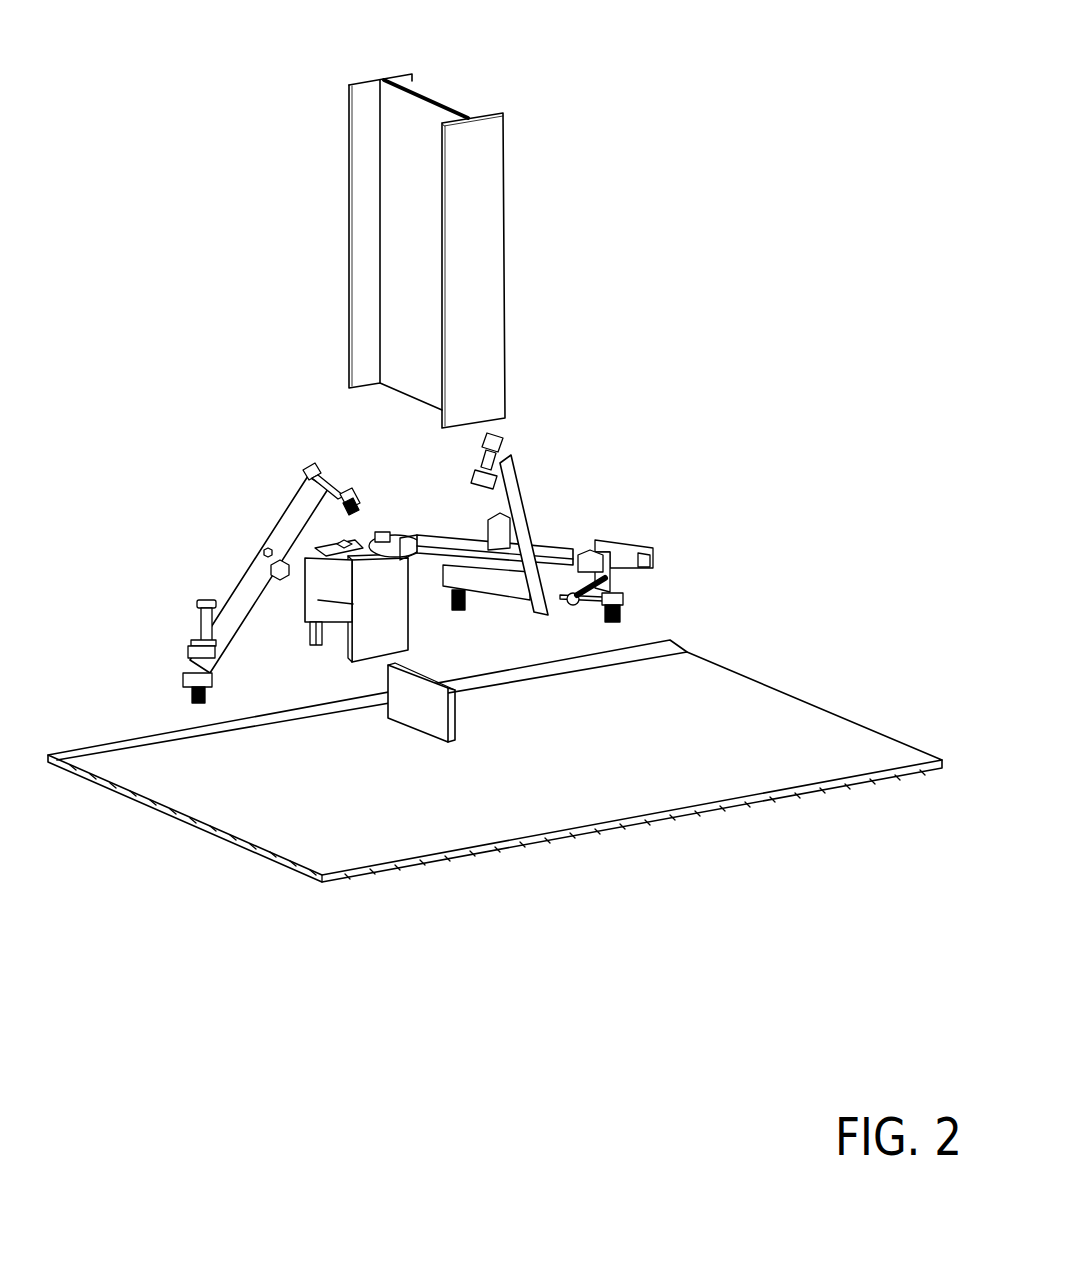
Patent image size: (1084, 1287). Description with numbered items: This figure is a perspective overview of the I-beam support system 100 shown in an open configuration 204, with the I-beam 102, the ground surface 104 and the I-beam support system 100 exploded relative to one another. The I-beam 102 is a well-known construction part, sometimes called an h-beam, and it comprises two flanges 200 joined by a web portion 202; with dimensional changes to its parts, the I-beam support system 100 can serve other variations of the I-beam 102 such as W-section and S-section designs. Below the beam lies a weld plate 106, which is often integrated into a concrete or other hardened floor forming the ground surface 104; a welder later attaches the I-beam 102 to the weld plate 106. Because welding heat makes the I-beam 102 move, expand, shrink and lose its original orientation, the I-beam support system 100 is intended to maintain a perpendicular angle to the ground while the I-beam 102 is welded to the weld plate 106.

The I-beam support system 100 is at (348, 555).
The I-beam 102 is at (431, 218).
The ground surface 104 is at (760, 710).
The weld plate 106 is at (425, 708).
The flanges 200 is at (363, 127).
The web portion 202 is at (405, 115).
The open configuration 204 is at (288, 514).